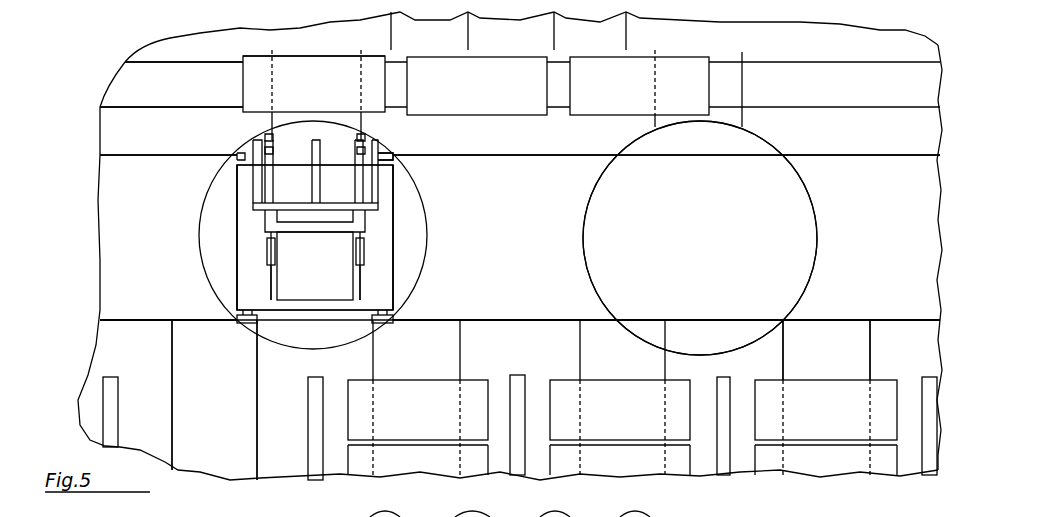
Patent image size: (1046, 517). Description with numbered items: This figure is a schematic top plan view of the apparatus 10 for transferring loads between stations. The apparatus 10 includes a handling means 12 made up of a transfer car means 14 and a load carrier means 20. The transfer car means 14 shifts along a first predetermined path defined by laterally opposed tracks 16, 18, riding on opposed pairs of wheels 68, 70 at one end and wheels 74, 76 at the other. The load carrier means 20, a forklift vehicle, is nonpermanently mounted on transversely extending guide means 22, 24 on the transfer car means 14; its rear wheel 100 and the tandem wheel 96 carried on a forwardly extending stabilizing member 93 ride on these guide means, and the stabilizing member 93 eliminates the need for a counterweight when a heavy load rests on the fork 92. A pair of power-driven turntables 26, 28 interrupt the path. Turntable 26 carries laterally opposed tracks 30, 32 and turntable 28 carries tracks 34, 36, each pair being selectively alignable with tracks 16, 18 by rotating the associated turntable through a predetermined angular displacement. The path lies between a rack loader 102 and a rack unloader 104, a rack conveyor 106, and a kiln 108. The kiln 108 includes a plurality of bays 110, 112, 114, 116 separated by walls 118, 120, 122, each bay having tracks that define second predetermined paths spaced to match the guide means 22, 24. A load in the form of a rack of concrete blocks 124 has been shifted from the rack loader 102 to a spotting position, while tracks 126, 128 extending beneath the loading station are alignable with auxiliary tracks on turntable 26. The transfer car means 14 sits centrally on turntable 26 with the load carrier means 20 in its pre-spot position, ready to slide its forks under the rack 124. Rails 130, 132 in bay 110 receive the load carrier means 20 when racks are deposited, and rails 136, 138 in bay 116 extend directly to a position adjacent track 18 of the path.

The apparatus 10 is at (190, 186).
The handling means 12 is at (440, 228).
The transfer car means 14 is at (384, 272).
The track 16 is at (112, 172).
The track 18 is at (118, 320).
The load carrier means 20 is at (362, 223).
The guide means 22 is at (268, 282).
The guide means 24 is at (362, 280).
The turntable 26 is at (452, 198).
The turntable 28 is at (828, 206).
The track 30 is at (298, 158).
The track 32 is at (308, 318).
The track 34 is at (683, 162).
The track 36 is at (696, 320).
The wheel 68 is at (238, 152).
The wheel 70 is at (256, 322).
The wheel 74 is at (396, 160).
The wheel 76 is at (374, 322).
The fork 92 is at (388, 142).
The stabilizing member 93 is at (356, 150).
The tandem wheel 96 is at (361, 135).
The rear wheel 100 is at (356, 264).
The rack loader 102 is at (425, 31).
The rack unloader 104 is at (600, 36).
The rack conveyor 106 is at (155, 82).
The kiln 108 is at (97, 347).
The bay 110 is at (230, 378).
The bay 112 is at (435, 376).
The bay 114 is at (645, 372).
The bay 116 is at (850, 376).
The wall 118 is at (118, 378).
The wall 120 is at (308, 380).
The wall 122 is at (522, 377).
The rack of concrete blocks 124 is at (320, 65).
The track 126 is at (268, 113).
The track 128 is at (367, 118).
The rail 130 is at (172, 408).
The rail 132 is at (257, 440).
The rail 136 is at (784, 348).
The rail 138 is at (871, 340).